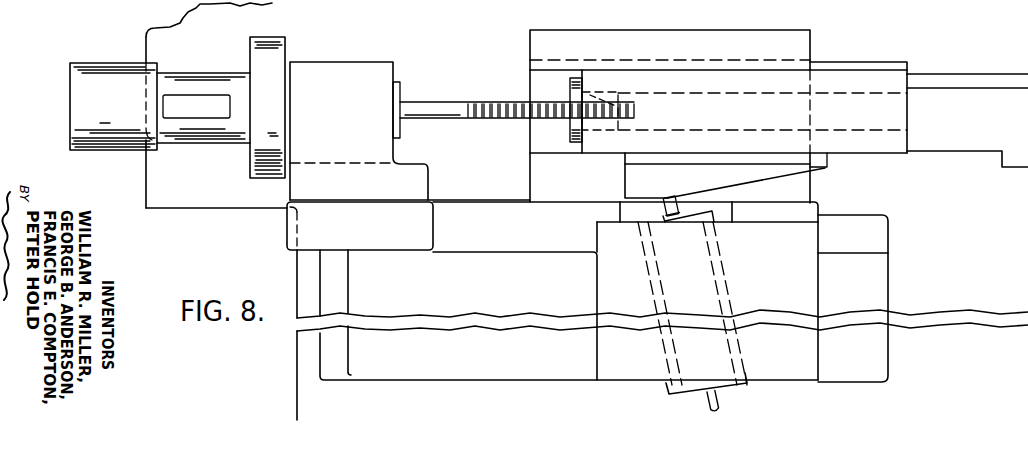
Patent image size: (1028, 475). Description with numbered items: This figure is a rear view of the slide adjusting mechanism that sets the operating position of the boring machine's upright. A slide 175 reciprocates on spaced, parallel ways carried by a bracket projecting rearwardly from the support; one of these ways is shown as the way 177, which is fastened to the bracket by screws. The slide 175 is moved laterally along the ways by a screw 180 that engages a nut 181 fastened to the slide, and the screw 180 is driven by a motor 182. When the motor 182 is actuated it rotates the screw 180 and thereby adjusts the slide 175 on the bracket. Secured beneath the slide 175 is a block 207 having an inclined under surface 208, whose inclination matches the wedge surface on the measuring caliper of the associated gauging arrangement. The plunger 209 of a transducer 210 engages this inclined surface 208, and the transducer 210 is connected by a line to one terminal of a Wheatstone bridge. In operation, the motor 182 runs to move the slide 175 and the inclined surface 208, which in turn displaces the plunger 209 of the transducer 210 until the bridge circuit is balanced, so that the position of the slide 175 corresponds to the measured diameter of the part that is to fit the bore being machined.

The slide 175 is at (895, 80).
The way 177 is at (800, 48).
The screw 180 is at (483, 102).
The nut 181 is at (570, 92).
The motor 182 is at (104, 77).
The block 207 is at (637, 173).
The inclined under surface 208 is at (798, 175).
The plunger 209 is at (665, 208).
The transducer 210 is at (690, 393).